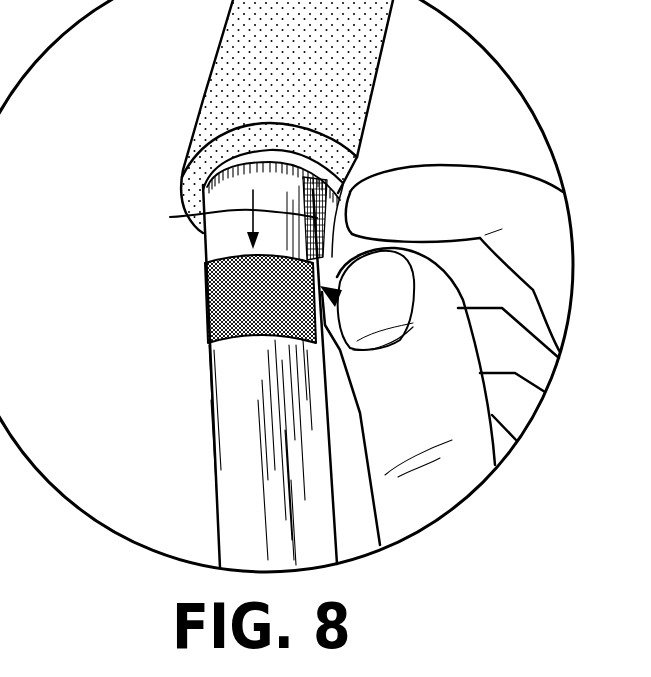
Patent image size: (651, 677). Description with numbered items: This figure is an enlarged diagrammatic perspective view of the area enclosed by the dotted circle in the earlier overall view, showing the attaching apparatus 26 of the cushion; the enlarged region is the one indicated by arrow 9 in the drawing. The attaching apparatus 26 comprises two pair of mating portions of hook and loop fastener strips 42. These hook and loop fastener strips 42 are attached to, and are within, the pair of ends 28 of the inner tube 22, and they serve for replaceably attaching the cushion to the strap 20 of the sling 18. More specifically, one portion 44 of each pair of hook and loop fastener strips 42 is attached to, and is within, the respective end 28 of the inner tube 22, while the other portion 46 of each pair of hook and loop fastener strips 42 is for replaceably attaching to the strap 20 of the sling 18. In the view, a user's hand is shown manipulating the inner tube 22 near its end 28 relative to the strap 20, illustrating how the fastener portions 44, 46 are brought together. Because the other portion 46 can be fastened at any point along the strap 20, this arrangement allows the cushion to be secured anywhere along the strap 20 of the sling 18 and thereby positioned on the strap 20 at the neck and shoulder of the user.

The gap between cap and applicator tube 9 is at (335, 270).
The sling 18 is at (192, 480).
The strap 20 is at (186, 405).
The inner tube 22 is at (210, 66).
The attaching apparatus 26 is at (343, 337).
The ends of the inner tube 28 is at (228, 150).
The hook and loop fastener strips 42 is at (207, 265).
The one portion of hook and loop fastener strips 44 is at (350, 193).
The other portion of hook and loop fastener strips 46 is at (233, 323).